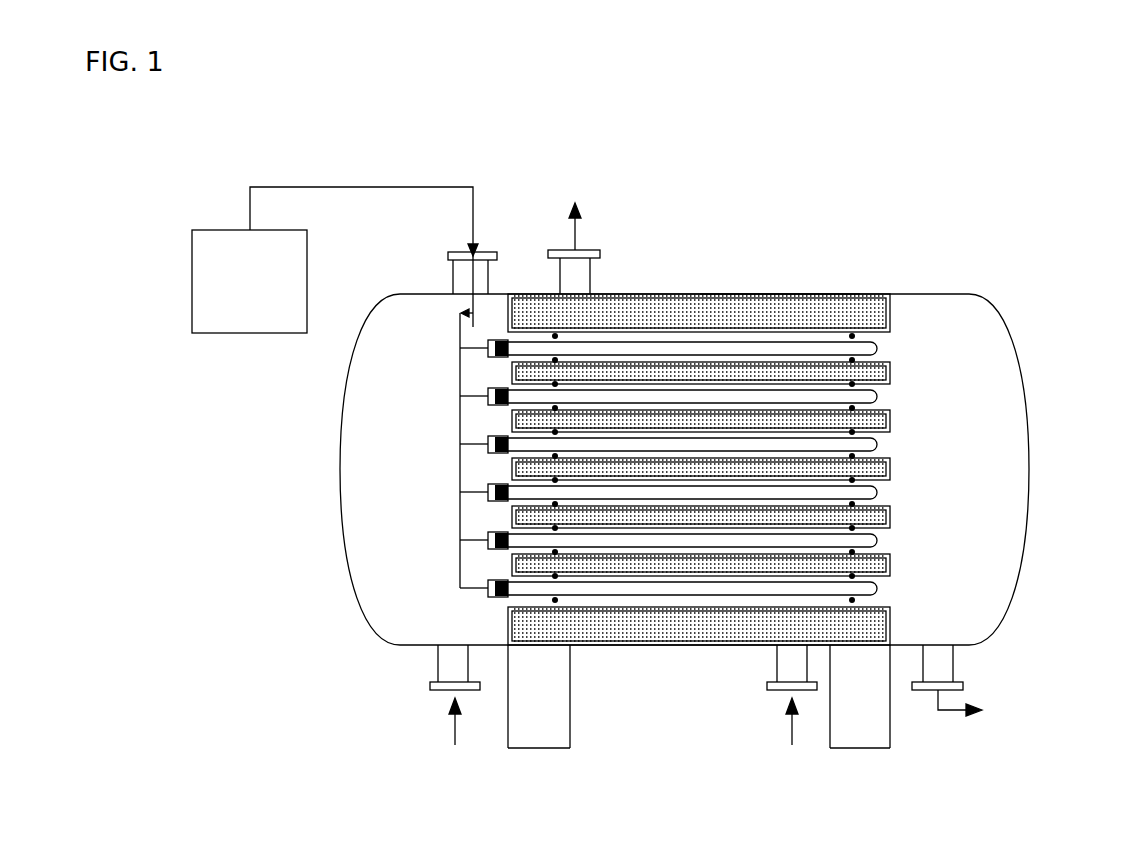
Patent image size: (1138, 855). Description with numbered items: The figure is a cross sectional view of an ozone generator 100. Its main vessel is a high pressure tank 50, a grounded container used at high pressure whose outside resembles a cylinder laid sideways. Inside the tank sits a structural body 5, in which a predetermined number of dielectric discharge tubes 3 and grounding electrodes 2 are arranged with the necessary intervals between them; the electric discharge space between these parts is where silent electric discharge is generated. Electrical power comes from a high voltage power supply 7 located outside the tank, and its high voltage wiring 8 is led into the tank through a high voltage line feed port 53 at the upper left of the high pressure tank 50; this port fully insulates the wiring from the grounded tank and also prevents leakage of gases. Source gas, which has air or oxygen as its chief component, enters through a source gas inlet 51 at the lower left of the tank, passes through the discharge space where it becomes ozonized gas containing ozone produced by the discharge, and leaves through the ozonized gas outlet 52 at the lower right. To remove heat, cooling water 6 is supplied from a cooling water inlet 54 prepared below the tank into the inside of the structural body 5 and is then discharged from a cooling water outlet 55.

The ozone generator 100 is at (1030, 148).
The high pressure tank 50 is at (1030, 468).
The structural body 5 is at (891, 301).
The cooling water 6 is at (783, 296).
The grounding electrodes 2 is at (891, 373).
The dielectric discharge tubes 3 is at (878, 348).
The high voltage power supply 7 is at (212, 229).
The high voltage wiring 8 is at (343, 192).
The high voltage line feed port 53 is at (447, 255).
The cooling water outlet 55 is at (601, 254).
The source gas inlet 51 is at (428, 686).
The cooling water inlet 54 is at (766, 686).
The ozonized gas outlet 52 is at (964, 688).